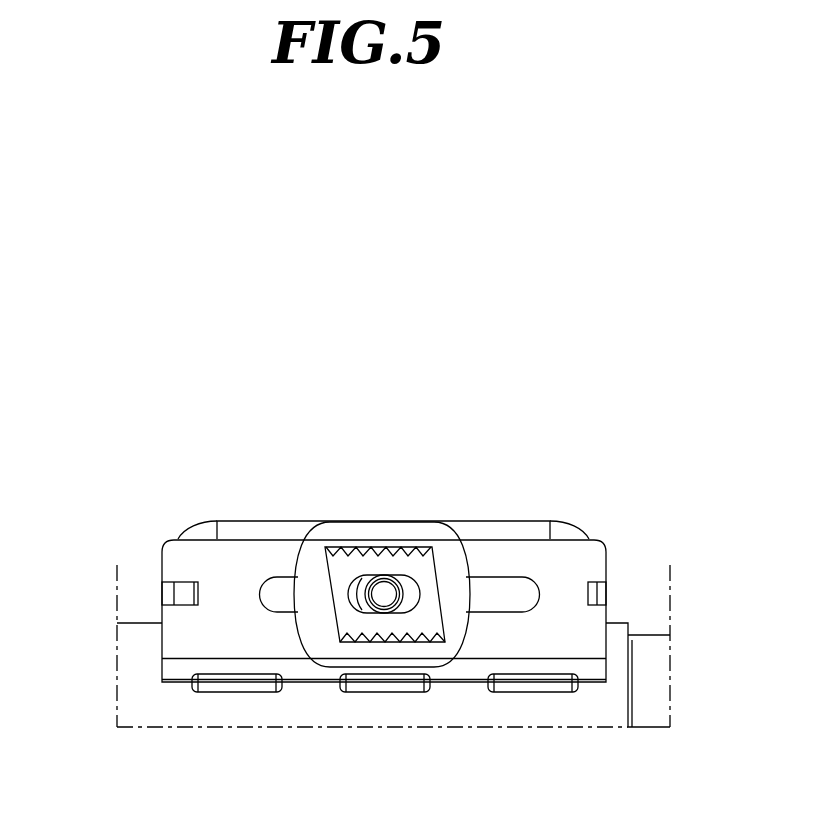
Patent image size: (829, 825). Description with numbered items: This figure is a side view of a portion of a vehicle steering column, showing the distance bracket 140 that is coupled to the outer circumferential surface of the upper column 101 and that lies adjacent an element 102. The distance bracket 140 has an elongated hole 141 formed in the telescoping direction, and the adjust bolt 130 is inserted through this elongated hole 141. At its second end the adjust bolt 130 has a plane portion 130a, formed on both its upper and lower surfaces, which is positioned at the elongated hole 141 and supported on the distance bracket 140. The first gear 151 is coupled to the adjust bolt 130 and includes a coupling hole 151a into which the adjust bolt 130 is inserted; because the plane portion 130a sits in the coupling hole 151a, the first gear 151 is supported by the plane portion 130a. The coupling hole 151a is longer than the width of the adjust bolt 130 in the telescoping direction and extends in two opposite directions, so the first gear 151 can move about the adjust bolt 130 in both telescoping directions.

The upper column 101 is at (133, 672).
The second housing 102 is at (655, 680).
The adjust bolt 130 is at (376, 632).
The plane portion 130a is at (381, 576).
The distance bracket 140 is at (175, 568).
The elongated hole 141 is at (280, 586).
The first gear 151 is at (310, 562).
The coupling hole 151a is at (366, 614).